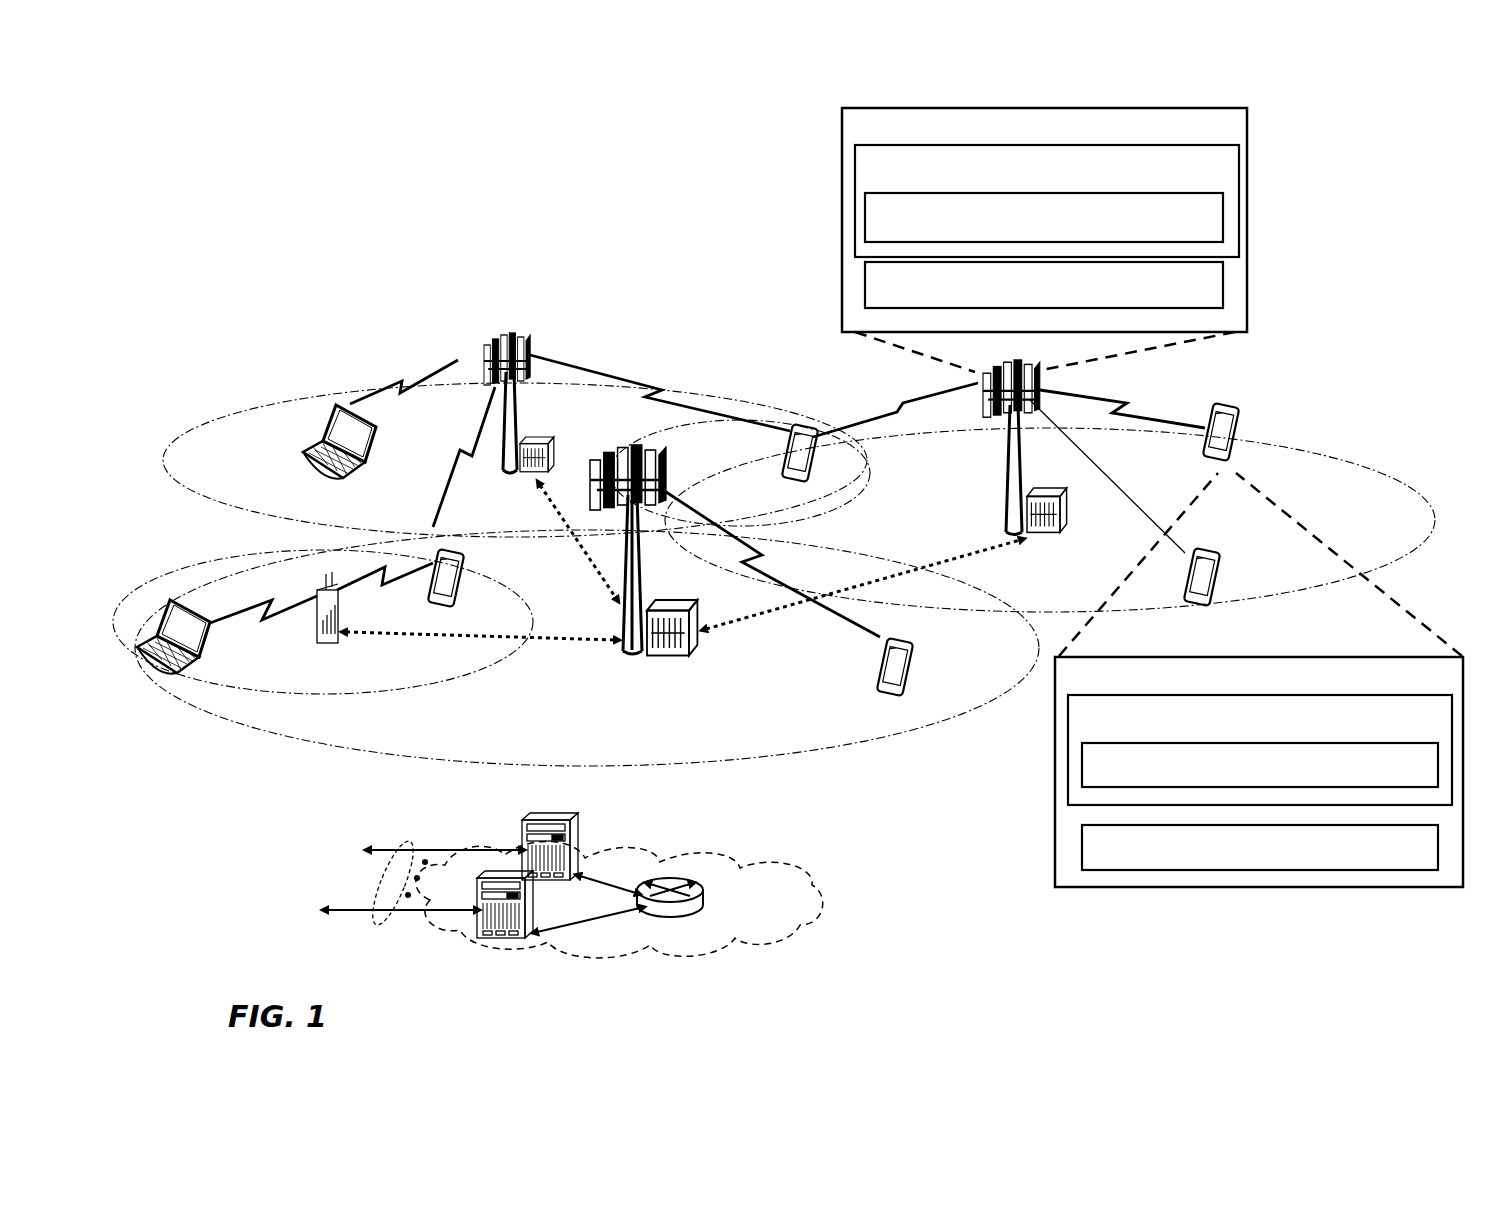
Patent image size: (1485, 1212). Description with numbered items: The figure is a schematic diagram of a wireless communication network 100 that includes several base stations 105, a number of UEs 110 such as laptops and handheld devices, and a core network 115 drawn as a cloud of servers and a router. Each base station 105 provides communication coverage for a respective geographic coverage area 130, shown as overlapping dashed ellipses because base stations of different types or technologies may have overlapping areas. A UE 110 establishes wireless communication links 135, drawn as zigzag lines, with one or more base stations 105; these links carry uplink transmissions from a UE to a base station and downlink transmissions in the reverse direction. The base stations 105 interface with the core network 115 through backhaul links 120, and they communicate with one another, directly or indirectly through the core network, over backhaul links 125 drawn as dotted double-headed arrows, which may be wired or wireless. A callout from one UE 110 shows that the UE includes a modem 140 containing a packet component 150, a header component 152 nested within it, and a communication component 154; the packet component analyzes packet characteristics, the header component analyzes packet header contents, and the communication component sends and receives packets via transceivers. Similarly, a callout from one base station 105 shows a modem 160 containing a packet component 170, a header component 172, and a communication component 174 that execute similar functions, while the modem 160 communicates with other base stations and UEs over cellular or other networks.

The wireless communication network 100 is at (160, 142).
The base station 105 is at (514, 452).
The user equipment (UE) 110 is at (350, 470).
The core network 115 is at (700, 951).
The backhaul link 120 is at (381, 912).
The backhaul link 125 is at (586, 558).
The geographic coverage area 130 is at (165, 470).
The wireless communication link 135 is at (1090, 458).
The modem 140 is at (1259, 680).
The packet component 150 is at (1260, 750).
The header component 152 is at (1260, 765).
The communication component 154 is at (1260, 847).
The modem 160 is at (1044, 240).
The packet component 170 is at (1047, 201).
The header component 172 is at (1044, 217).
The communication component 174 is at (1044, 285).